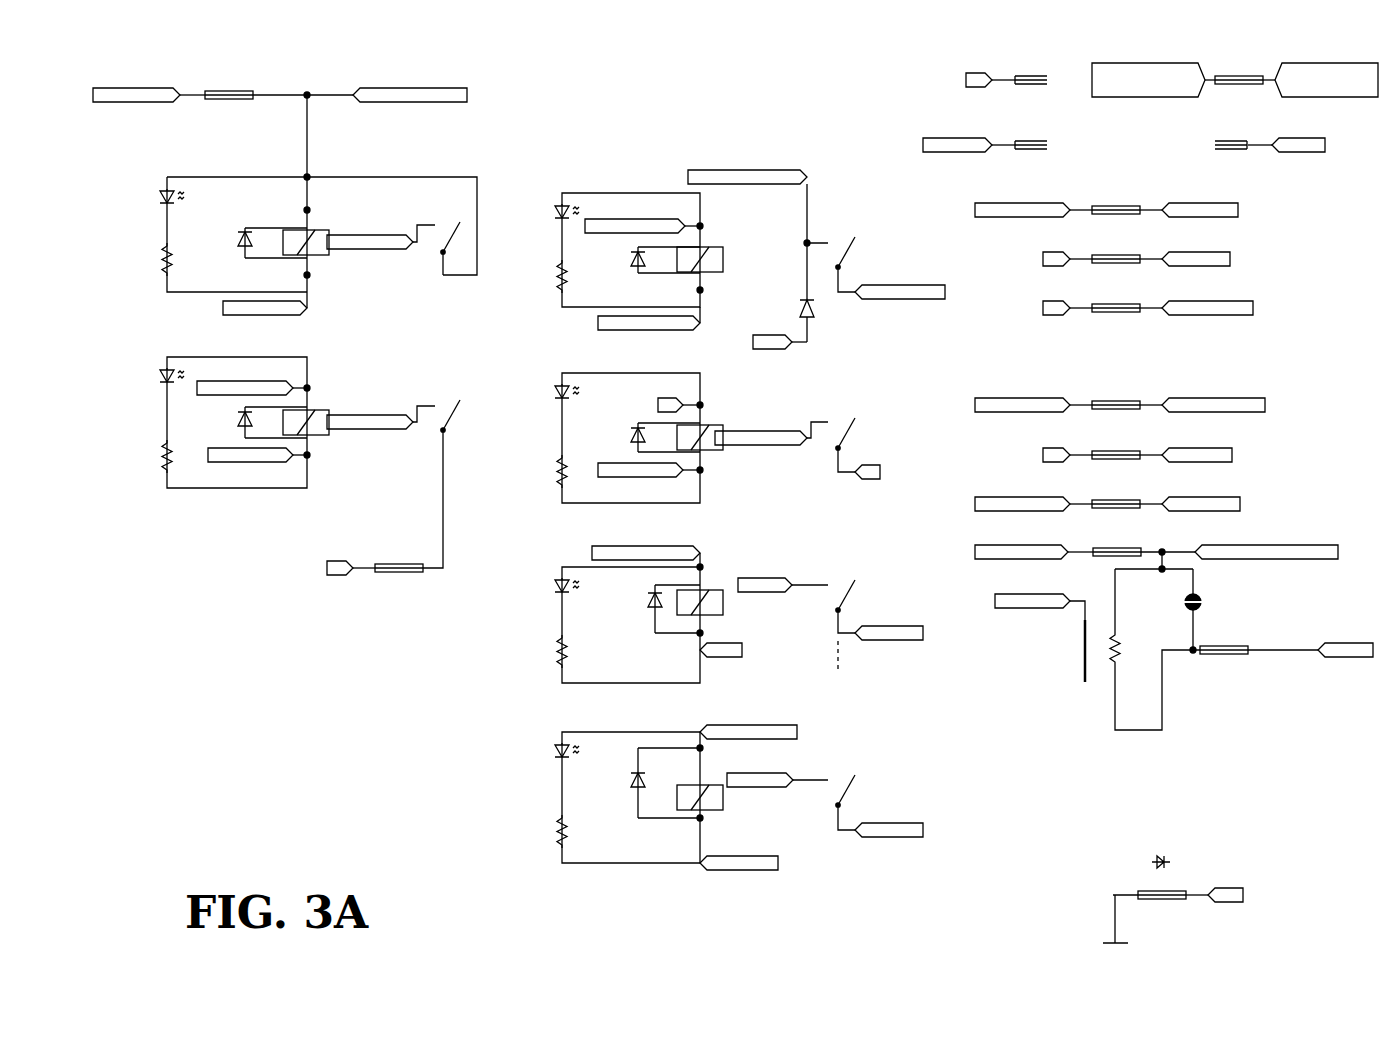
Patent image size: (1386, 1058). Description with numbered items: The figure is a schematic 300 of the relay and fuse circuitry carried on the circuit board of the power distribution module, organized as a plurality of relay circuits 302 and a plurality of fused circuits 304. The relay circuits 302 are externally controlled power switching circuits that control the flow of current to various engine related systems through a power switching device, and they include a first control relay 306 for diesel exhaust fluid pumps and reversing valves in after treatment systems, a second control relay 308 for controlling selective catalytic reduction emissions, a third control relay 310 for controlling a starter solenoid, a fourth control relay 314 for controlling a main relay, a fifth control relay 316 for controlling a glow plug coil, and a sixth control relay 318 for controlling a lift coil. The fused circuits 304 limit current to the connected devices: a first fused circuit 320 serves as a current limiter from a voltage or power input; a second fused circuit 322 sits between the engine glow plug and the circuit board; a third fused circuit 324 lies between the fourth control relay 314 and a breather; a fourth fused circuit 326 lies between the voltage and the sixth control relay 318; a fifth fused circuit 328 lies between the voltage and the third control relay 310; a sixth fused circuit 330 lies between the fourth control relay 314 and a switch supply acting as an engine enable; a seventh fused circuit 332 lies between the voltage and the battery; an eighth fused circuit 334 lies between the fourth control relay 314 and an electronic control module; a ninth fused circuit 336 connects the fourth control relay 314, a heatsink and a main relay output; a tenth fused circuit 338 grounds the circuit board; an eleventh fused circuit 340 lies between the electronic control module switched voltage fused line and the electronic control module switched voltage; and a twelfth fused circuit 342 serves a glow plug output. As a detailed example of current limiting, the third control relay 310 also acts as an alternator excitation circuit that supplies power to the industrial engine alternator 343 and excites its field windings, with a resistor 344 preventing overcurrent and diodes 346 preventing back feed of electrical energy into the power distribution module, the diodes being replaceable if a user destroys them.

The schematic 300 is at (200, 708).
The plurality of relay circuits 302 is at (622, 108).
The plurality of fused circuits 304 is at (1300, 765).
The first control relay 306 is at (188, 163).
The second control relay 308 is at (157, 355).
The third control relay 310 is at (572, 190).
The fourth control relay 314 is at (530, 372).
The fifth control relay 316 is at (530, 612).
The sixth control relay 318 is at (530, 795).
The first fused circuit 320 is at (960, 80).
The second fused circuit 322 is at (918, 145).
The third fused circuit 324 is at (968, 210).
The fourth fused circuit 326 is at (1038, 259).
The fifth fused circuit 328 is at (1038, 308).
The sixth fused circuit 330 is at (968, 405).
The seventh fused circuit 332 is at (1038, 455).
The eighth fused circuit 334 is at (968, 504).
The ninth fused circuit 336 is at (968, 552).
The tenth fused circuit 338 is at (1068, 868).
The eleventh fused circuit 340 is at (1352, 103).
The twelfth fused circuit 342 is at (1307, 157).
The industrial engine alternator 343 is at (725, 260).
The resistor 344 is at (560, 268).
The diodes 346 is at (558, 200).